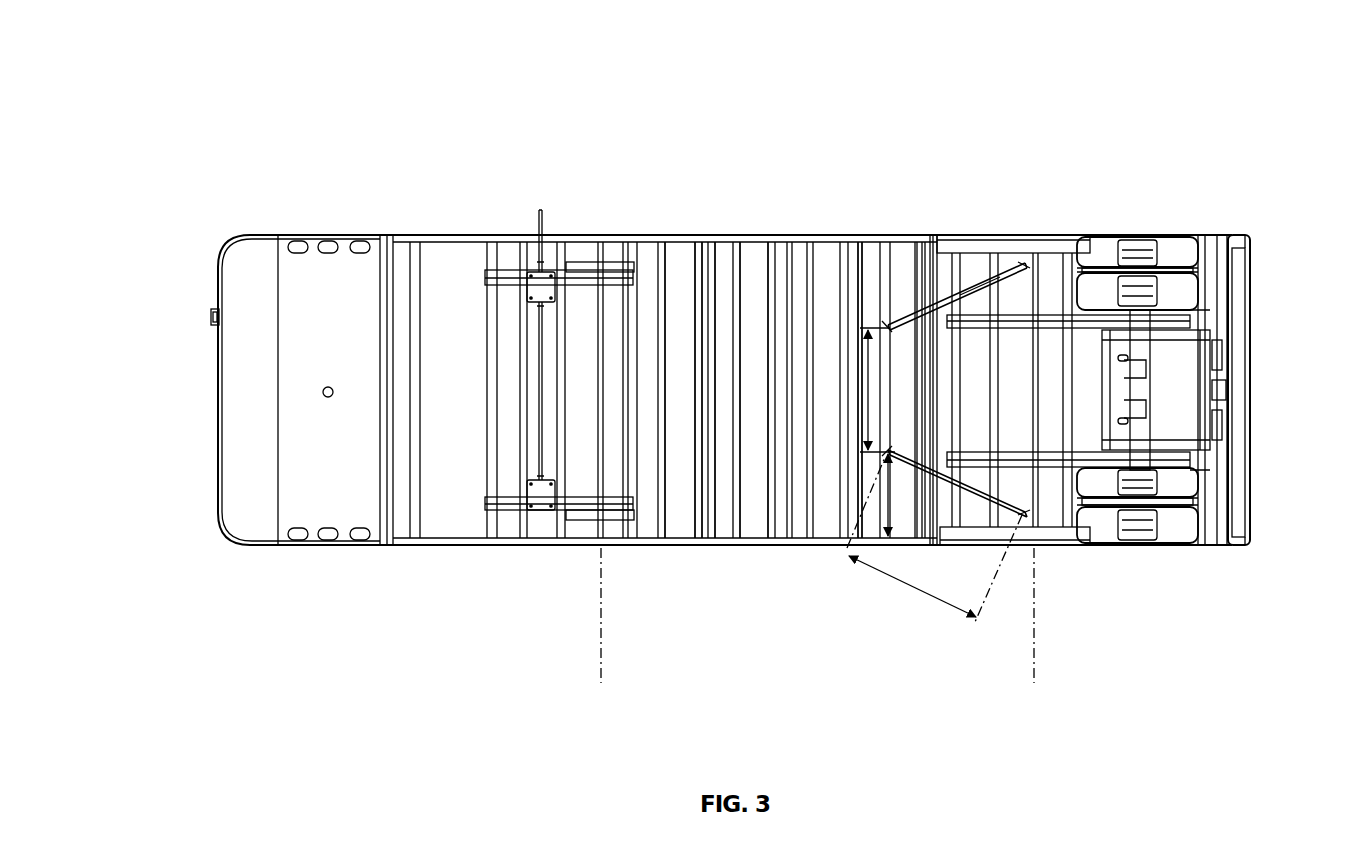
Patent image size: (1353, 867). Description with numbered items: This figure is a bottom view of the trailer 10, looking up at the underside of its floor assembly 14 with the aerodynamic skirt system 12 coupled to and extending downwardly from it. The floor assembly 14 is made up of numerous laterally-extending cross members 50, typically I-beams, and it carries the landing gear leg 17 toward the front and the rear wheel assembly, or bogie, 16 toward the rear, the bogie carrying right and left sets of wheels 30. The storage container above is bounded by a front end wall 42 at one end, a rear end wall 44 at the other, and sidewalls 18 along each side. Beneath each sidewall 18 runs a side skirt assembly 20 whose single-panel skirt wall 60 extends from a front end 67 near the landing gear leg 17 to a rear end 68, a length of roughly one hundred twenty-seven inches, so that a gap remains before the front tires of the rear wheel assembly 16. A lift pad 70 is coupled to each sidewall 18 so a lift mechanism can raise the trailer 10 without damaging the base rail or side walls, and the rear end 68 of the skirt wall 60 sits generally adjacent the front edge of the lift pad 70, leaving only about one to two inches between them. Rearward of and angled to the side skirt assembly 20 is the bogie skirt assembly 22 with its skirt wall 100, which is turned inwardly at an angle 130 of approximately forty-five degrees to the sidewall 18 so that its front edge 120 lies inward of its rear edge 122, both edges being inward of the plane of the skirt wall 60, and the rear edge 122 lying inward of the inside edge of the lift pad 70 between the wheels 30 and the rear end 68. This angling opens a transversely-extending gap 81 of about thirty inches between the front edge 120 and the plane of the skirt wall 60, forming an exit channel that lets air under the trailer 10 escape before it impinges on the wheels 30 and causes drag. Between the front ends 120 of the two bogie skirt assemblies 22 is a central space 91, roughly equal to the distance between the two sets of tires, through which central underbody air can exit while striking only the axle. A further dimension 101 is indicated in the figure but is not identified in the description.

The trailer 10 is at (252, 82).
The aerodynamic skirt system 12 is at (601, 683).
The floor assembly 14 is at (320, 467).
The rear wheel assembly 16 is at (1235, 221).
The landing gear leg 17 is at (530, 288).
The sidewall 18 is at (306, 236).
The side skirt assembly 20 is at (792, 230).
The bogie skirt assembly 22 is at (903, 298).
The wheels 30 is at (1097, 245).
The front end wall 42 is at (238, 375).
The rear end wall 44 is at (1250, 258).
The cross members 50 is at (684, 280).
The skirt wall 60 is at (708, 242).
The front end 67 is at (590, 242).
The rear end 68 is at (937, 240).
The lift pad 70 is at (1062, 540).
The transversely-extending gap 81 is at (863, 548).
The space 91 is at (865, 392).
The skirt wall 100 is at (937, 240).
The brace offset distance 101 is at (946, 604).
The front edge 120 is at (880, 327).
The rear edge 122 is at (1022, 262).
The angle 130 is at (976, 272).